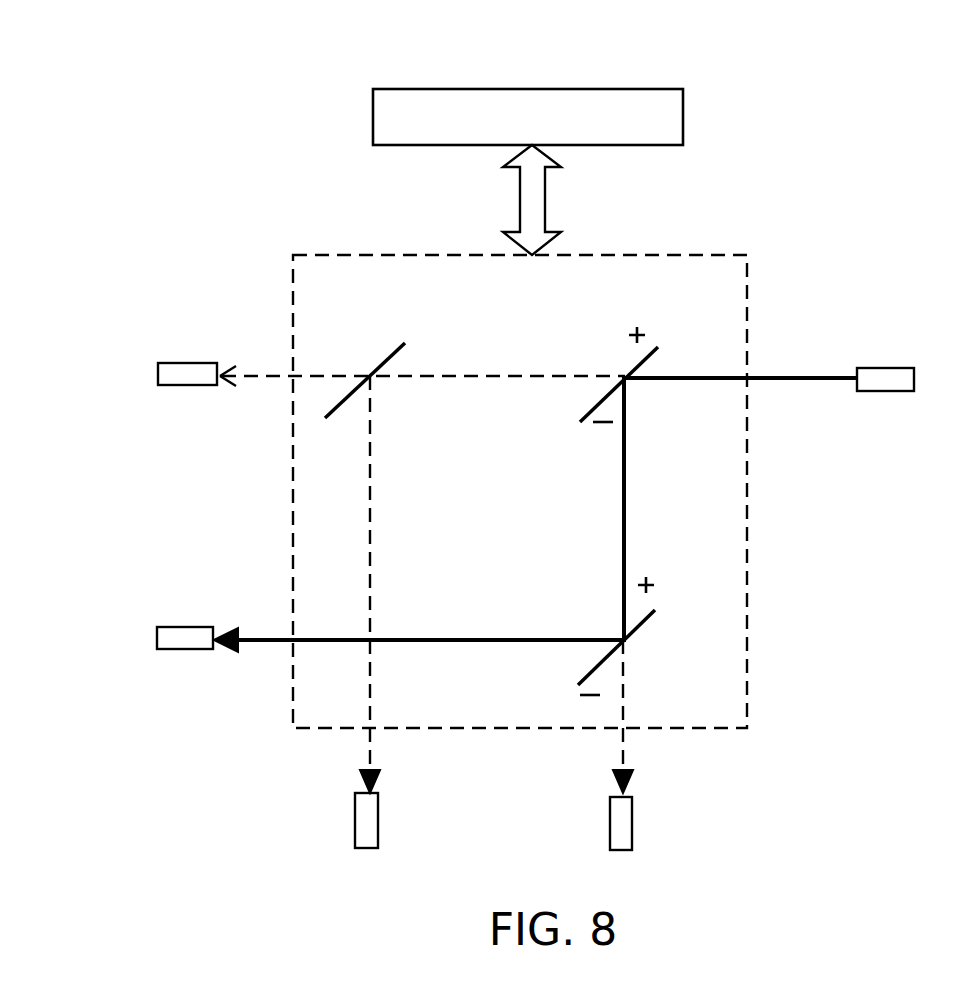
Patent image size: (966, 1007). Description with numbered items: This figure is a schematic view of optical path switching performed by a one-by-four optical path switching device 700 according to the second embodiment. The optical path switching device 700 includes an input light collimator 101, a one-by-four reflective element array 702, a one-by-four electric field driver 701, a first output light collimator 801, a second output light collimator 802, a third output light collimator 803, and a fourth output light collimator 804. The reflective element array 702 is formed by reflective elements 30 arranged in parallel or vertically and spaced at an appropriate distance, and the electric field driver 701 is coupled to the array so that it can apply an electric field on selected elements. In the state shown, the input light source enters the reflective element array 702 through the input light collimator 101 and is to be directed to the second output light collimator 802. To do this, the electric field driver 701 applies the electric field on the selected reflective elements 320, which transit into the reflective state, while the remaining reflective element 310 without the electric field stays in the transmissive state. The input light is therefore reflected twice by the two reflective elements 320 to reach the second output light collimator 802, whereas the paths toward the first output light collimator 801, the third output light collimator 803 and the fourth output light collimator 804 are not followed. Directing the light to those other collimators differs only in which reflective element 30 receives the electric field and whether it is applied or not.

The 1×4 optical path switching device 700 is at (862, 134).
The 1×4 electric field driver 701 is at (522, 86).
The 1×4 reflective element array 702 is at (747, 408).
The input light collimator 101 is at (893, 368).
The reflective element 30 is at (525, 493).
The reflective element without applied electric field 310 is at (395, 350).
The reflective element with applied electric field 320 is at (650, 352).
The first output light collimator 801 is at (158, 375).
The second output light collimator 802 is at (157, 638).
The third output light collimator 803 is at (355, 829).
The fourth output light collimator 804 is at (633, 825).